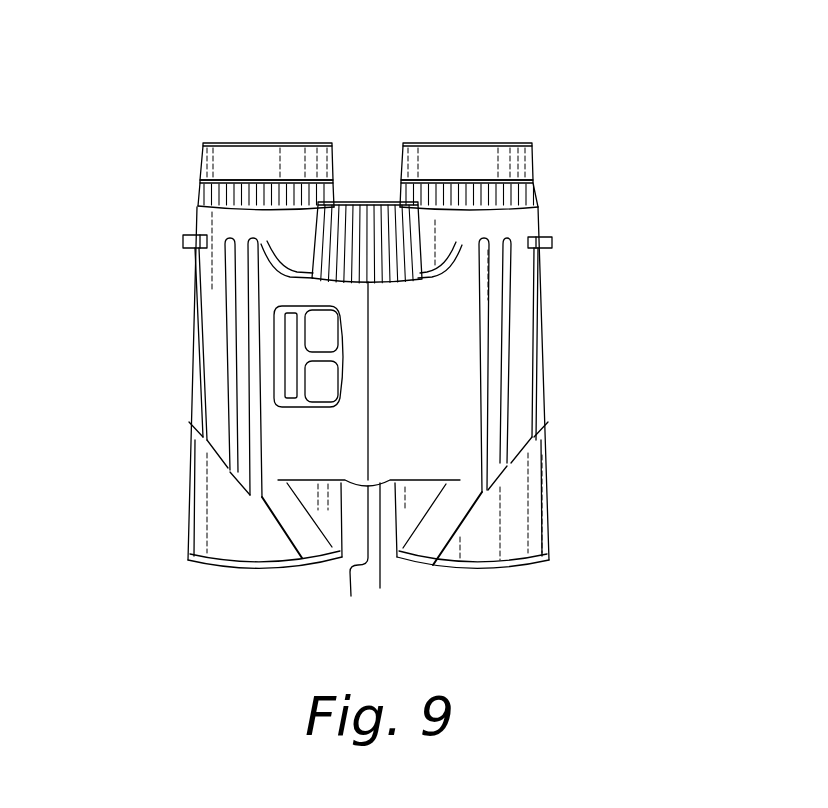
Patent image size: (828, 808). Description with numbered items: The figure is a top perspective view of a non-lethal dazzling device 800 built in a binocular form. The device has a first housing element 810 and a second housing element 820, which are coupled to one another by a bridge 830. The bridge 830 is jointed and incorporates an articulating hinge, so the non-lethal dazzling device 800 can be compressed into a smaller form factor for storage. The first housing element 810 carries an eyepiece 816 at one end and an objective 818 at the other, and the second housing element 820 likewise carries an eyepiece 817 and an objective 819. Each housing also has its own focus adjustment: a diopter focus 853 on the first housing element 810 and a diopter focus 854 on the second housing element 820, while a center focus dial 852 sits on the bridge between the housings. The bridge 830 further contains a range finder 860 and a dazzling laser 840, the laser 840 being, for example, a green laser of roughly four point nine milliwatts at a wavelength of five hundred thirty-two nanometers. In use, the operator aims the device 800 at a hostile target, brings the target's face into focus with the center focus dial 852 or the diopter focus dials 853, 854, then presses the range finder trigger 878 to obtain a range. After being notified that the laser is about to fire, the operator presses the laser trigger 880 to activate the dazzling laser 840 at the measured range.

The non-lethal dazzling device 800 is at (545, 115).
The first housing element 810 is at (187, 443).
The eyepiece 816 is at (267, 142).
The eyepiece 817 is at (467, 142).
The objective 818 is at (238, 570).
The objective 819 is at (523, 570).
The second housing element 820 is at (547, 453).
The bridge 830 is at (337, 474).
The dazzling laser 840 is at (349, 558).
The center focus dial 852 is at (368, 200).
The diopter focus 853 is at (201, 195).
The diopter focus 854 is at (535, 192).
The range finder 860 is at (380, 588).
The range finder trigger 878 is at (318, 332).
The laser trigger 880 is at (323, 377).